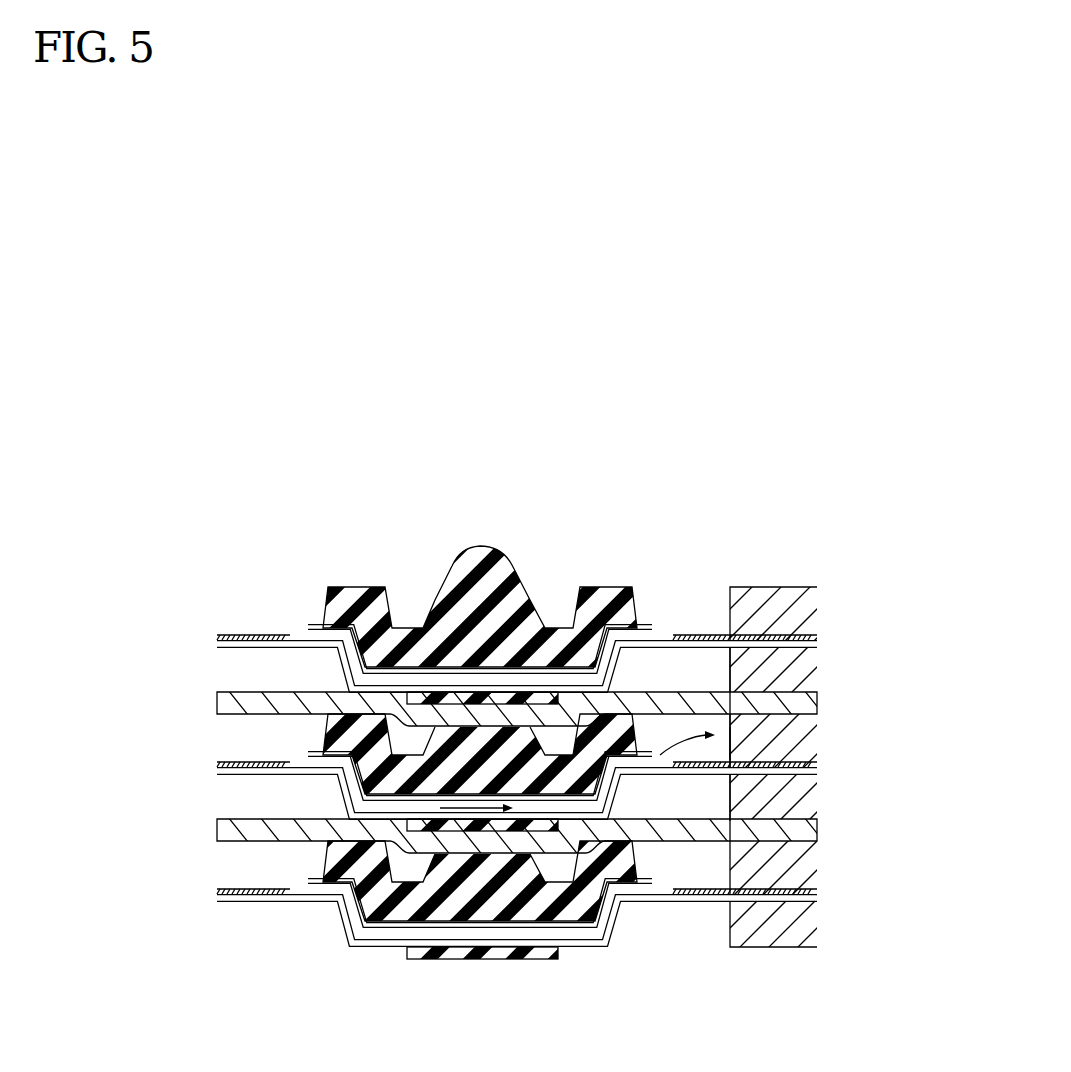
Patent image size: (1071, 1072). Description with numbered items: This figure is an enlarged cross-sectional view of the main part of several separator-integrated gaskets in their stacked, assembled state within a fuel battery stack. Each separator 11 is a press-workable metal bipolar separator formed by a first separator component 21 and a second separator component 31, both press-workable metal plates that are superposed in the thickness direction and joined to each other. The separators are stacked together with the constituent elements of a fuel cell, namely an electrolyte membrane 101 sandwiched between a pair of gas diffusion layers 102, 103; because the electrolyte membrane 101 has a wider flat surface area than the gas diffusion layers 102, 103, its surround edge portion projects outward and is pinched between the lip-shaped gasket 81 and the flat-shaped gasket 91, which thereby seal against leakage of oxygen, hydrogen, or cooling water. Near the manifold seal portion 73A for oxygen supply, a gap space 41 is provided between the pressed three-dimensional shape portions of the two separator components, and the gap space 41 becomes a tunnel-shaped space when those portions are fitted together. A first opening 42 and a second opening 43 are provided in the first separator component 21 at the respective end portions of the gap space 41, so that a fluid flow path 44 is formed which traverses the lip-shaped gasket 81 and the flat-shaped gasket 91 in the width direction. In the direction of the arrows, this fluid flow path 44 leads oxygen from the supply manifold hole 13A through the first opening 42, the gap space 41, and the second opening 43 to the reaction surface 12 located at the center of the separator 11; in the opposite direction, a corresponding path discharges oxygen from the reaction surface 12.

The separator 11 is at (844, 781).
The reaction surface 12 is at (905, 740).
The manifold hole for oxygen supply 13A is at (296, 751).
The first separator component 21 is at (810, 753).
The second separator component 31 is at (820, 809).
The gap space 41 is at (430, 807).
The first opening 42 is at (302, 757).
The second opening 43 is at (657, 750).
The fluid flow path 44 is at (530, 807).
The manifold seal portion for oxygen supply 73A is at (362, 566).
The lip-shaped gasket 81 is at (493, 770).
The flat-shaped gasket 91 is at (492, 800).
The electrolyte membrane 101 is at (810, 700).
The gas diffusion layer 102 is at (808, 670).
The gas diffusion layer 103 is at (810, 735).